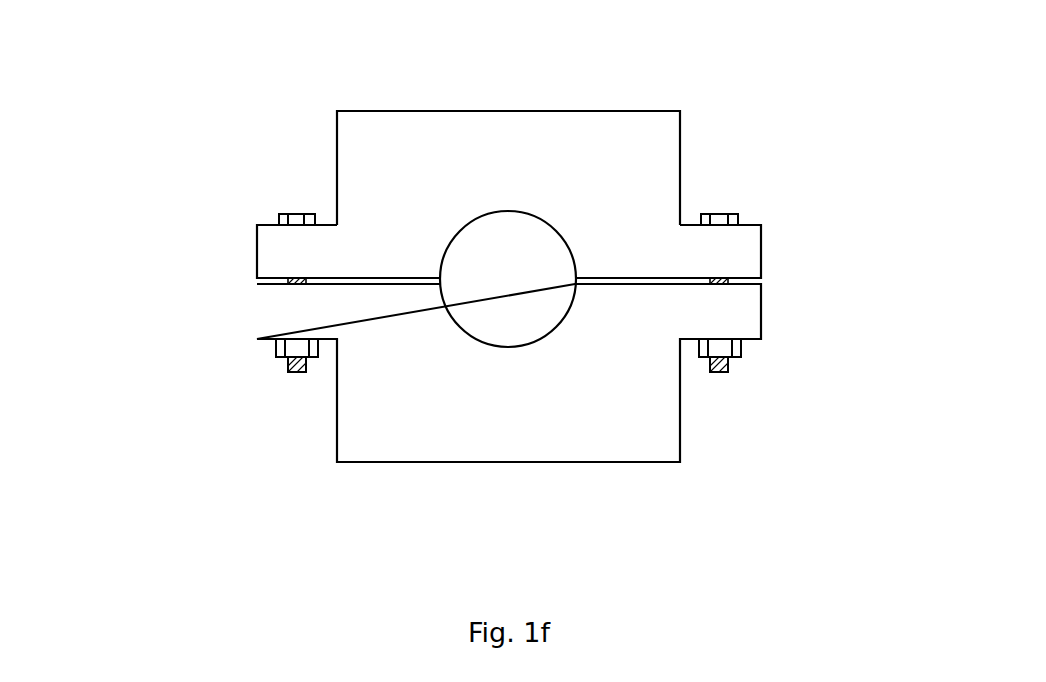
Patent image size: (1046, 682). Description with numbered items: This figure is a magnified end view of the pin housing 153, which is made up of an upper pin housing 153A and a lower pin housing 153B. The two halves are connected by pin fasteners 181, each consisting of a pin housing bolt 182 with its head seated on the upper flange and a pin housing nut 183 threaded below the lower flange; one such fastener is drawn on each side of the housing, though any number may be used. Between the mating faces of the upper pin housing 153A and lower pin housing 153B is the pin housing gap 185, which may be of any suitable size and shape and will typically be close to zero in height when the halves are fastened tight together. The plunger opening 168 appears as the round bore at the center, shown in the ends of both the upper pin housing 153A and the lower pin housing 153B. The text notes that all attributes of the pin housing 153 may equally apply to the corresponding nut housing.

The pin housing 153 is at (125, 98).
The upper pin housing 153A is at (335, 108).
The lower pin housing 153B is at (332, 462).
The plunger opening 168 is at (482, 345).
The pin fasteners 181 is at (257, 215).
The pin housing bolts 182 is at (277, 213).
The pin housing nuts 183 is at (270, 355).
The pin housing gap 185 is at (762, 280).